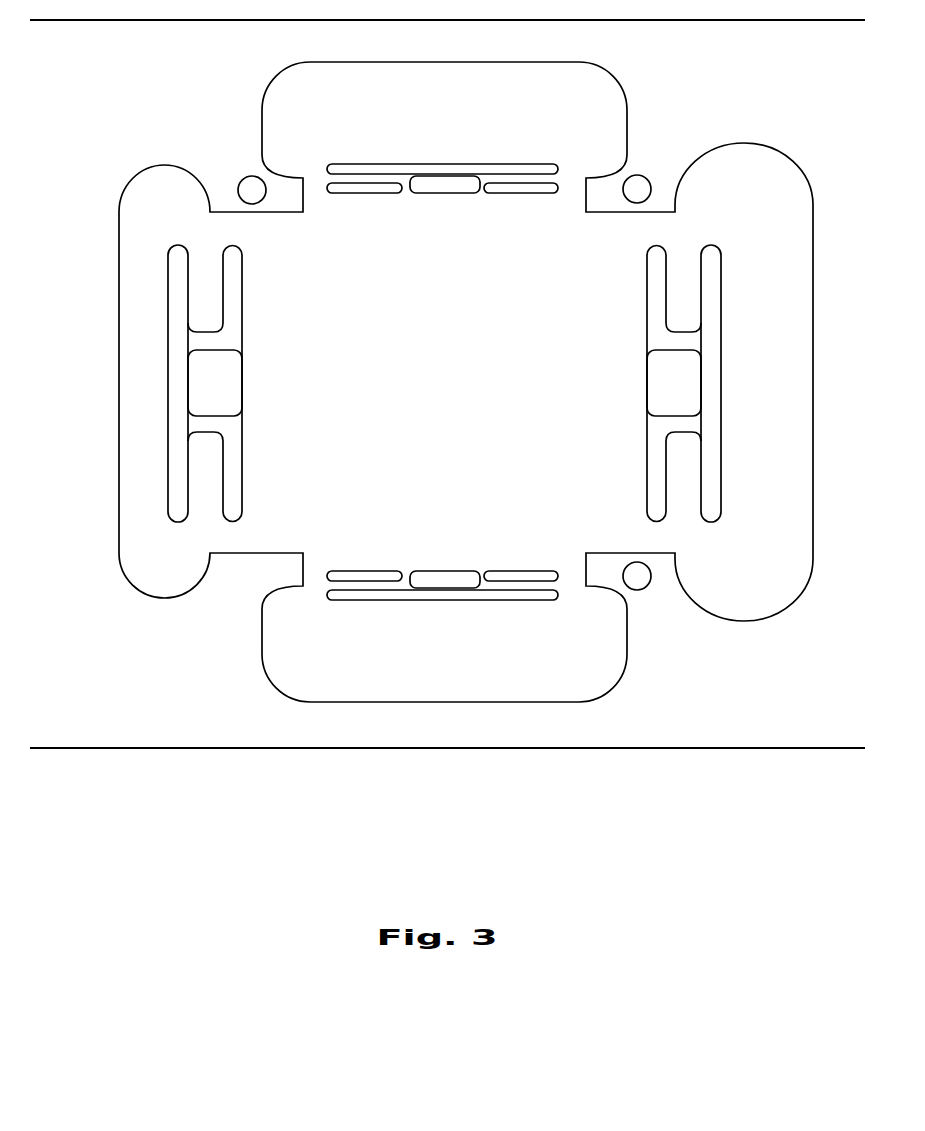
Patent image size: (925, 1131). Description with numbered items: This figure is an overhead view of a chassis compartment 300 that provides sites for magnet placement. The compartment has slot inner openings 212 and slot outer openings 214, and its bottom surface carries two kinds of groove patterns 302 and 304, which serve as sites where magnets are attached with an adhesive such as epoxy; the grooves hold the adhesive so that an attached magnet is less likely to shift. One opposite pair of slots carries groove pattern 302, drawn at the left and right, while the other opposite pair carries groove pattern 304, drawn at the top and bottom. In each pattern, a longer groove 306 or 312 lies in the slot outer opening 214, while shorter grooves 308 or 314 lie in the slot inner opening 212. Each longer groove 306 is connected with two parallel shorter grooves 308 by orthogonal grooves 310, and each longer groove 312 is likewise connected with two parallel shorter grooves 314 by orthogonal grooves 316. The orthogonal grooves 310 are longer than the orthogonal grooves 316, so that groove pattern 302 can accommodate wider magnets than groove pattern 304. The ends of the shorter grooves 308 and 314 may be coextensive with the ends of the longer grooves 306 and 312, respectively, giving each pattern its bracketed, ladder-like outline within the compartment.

The chassis compartment 300 is at (201, 827).
The slot inner openings 212 is at (441, 382).
The slot outer openings 214 is at (466, 382).
The groove pattern 302 is at (262, 450).
The groove pattern 304 is at (500, 210).
The longer groove 306 is at (177, 403).
The shorter grooves 308 is at (235, 313).
The orthogonal grooves 310 is at (207, 340).
The longer groove 312 is at (383, 165).
The shorter grooves 314 is at (502, 187).
The orthogonal grooves 316 is at (478, 180).